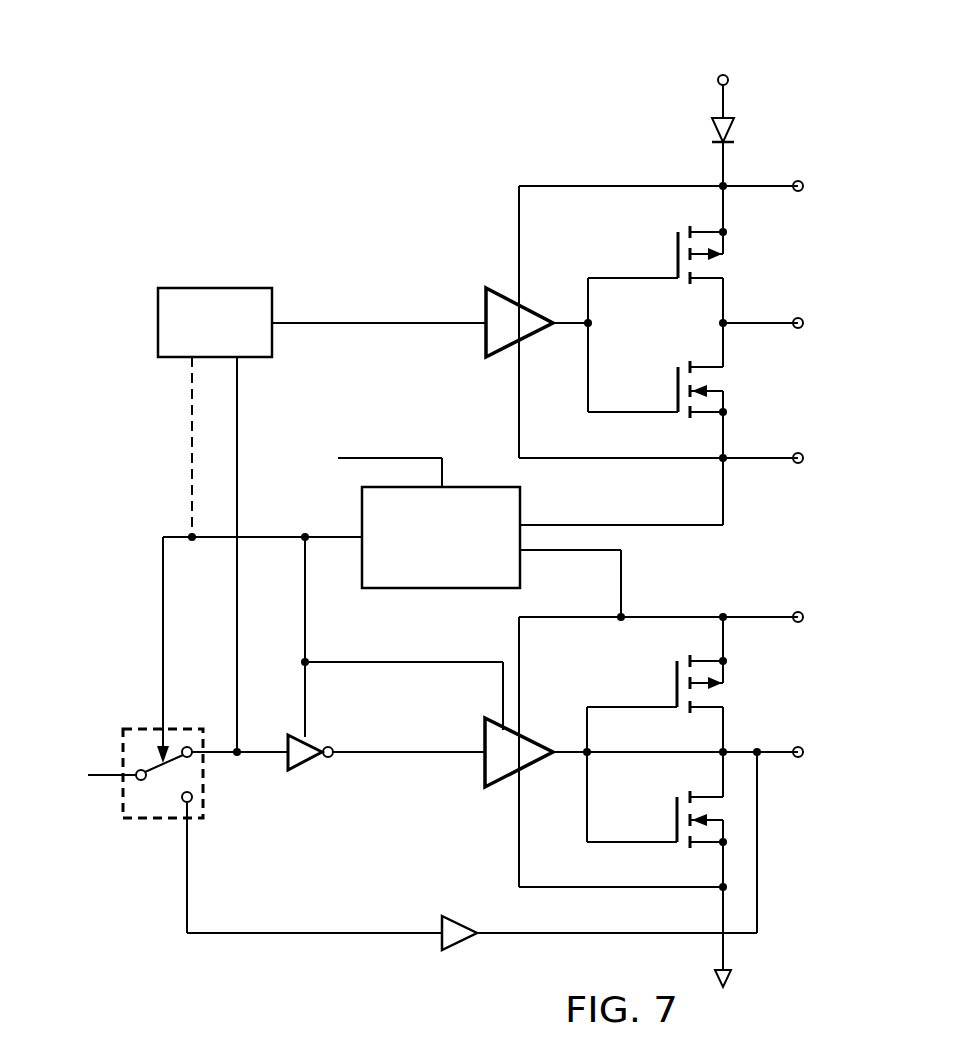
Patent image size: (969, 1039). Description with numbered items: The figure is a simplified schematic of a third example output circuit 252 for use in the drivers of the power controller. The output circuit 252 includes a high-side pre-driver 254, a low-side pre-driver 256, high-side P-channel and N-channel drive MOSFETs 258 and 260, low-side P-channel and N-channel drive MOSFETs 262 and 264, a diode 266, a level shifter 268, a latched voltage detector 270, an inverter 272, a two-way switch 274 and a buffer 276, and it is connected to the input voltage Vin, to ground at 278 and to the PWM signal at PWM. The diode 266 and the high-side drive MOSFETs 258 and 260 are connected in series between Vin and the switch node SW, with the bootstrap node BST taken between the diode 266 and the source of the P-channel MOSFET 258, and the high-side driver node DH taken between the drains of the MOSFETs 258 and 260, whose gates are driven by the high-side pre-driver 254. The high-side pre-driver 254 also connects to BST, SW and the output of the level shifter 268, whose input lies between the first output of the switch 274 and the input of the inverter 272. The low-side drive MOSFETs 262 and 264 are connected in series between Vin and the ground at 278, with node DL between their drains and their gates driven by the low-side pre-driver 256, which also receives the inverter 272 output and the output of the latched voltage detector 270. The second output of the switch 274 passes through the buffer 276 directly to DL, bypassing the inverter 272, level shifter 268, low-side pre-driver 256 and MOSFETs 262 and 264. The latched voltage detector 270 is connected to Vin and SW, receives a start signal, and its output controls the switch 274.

The output circuit 252 is at (290, 84).
The high-side pre-driver 254 is at (485, 306).
The low-side pre-driver 256 is at (484, 770).
The high-side P-channel drive MOSFET 258 is at (677, 246).
The high-side N-channel drive MOSFET 260 is at (677, 381).
The low-side P-channel drive MOSFET 262 is at (676, 676).
The low-side N-channel drive MOSFET 264 is at (676, 811).
The diode 266 is at (734, 133).
The level shifter 268 is at (215, 287).
The latched voltage detector 270 is at (428, 589).
The inverter 272 is at (312, 766).
The 2-way switch 274 is at (135, 819).
The buffer 276 is at (460, 946).
The ground 278 is at (727, 980).